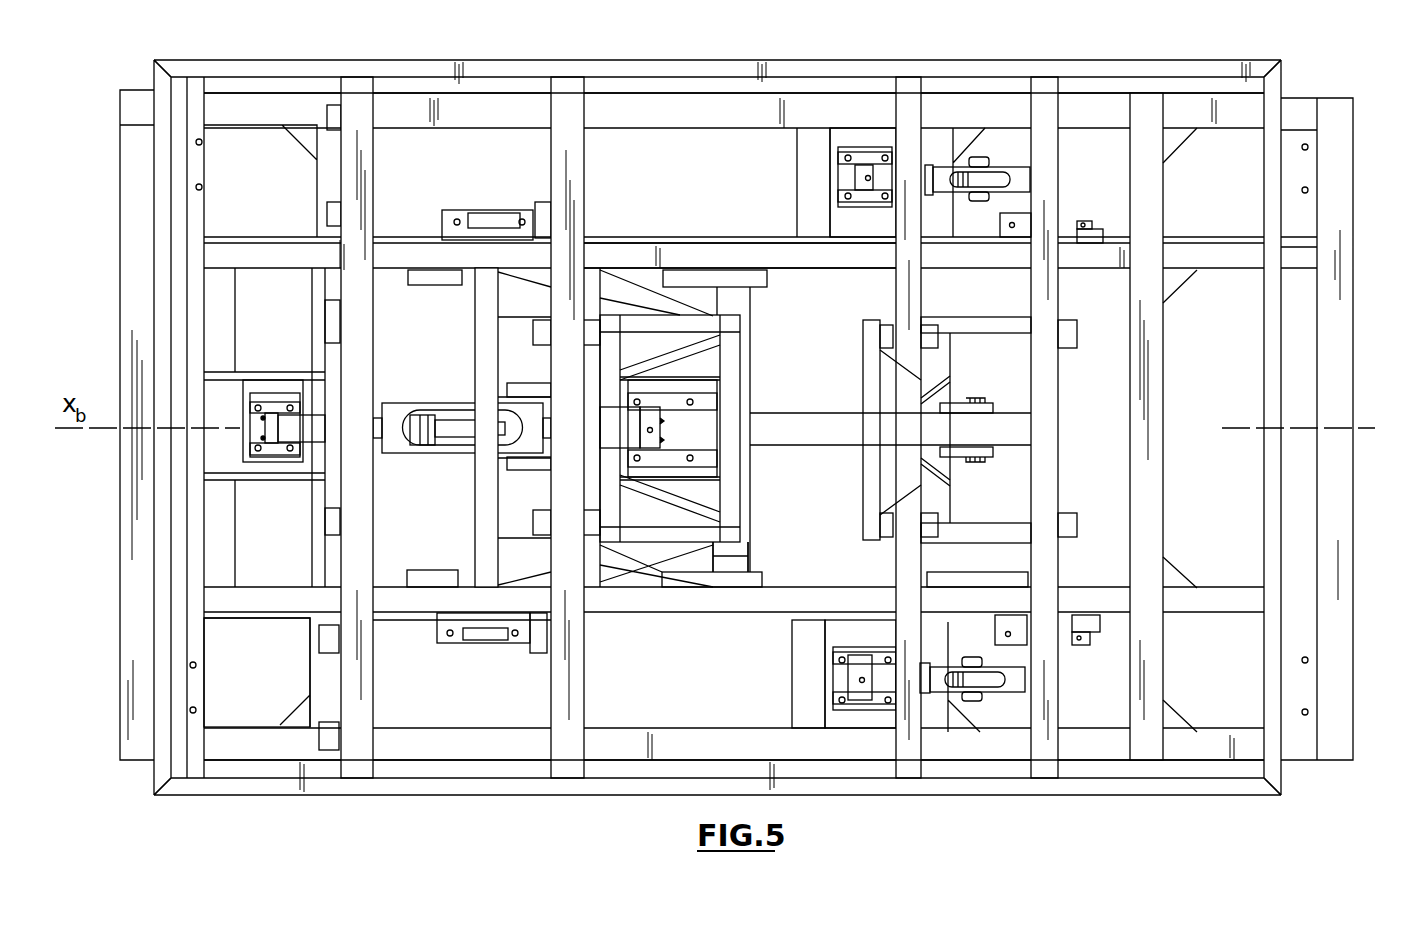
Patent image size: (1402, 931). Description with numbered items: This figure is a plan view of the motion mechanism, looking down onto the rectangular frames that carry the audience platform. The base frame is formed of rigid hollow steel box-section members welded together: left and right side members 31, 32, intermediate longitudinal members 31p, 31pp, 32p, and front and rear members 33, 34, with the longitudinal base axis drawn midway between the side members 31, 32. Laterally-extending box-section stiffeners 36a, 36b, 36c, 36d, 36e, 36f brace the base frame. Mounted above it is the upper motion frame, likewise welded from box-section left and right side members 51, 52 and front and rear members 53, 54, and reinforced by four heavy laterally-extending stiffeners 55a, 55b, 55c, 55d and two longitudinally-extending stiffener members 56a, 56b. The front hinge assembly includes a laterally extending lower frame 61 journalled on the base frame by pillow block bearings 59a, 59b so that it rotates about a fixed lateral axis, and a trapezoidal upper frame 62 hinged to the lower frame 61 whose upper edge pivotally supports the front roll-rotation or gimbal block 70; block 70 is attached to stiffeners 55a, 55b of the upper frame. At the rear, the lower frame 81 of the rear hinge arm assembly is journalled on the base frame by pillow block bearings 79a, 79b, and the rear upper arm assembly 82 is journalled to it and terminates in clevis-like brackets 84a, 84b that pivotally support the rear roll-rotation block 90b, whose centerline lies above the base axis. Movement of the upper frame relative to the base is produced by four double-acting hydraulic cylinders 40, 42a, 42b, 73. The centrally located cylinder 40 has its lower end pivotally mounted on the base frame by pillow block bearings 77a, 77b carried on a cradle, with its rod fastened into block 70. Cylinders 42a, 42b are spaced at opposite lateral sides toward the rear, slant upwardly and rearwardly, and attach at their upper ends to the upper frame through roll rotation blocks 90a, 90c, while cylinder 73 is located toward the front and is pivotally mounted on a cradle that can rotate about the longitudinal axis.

The left side member 31 is at (727, 756).
The intermediate longitudinal member 31p is at (382, 622).
The intermediate longitudinal member 31pp is at (845, 435).
The right side member 32 is at (663, 122).
The intermediate longitudinal member 32p is at (622, 238).
The front member 33 is at (152, 467).
The rear member 34 is at (1347, 466).
The laterally-extending stiffener 36a is at (320, 672).
The laterally-extending stiffener 36b is at (607, 582).
The laterally-extending stiffener 36c is at (742, 566).
The laterally-extending stiffener 36d is at (805, 655).
The laterally-extending stiffener 36e is at (932, 648).
The laterally-extending stiffener 36f is at (1140, 668).
The double-acting hydraulic cylinder 40 is at (637, 441).
The double-acting hydraulic cylinder 42a is at (835, 690).
The double-acting hydraulic cylinder 42b is at (855, 172).
The left side member 51 is at (1085, 797).
The right side member 52 is at (243, 60).
The front member 53 is at (172, 82).
The rear member 54 is at (1280, 84).
The laterally-extending stiffener 55a is at (355, 78).
The laterally-extending stiffener 55b is at (570, 82).
The laterally-extending stiffener 55c is at (908, 80).
The laterally-extending stiffener 55d is at (1046, 88).
The longitudinally-extending stiffener member 56a is at (712, 600).
The longitudinally-extending stiffener member 56b is at (815, 252).
The pillow block bearing 59a is at (468, 645).
The pillow block bearing 59b is at (485, 213).
The lower frame 61 is at (487, 517).
The upper frame 62 is at (732, 358).
The front roll-rotation block 70 is at (390, 414).
The double-acting hydraulic cylinder 73 is at (305, 435).
The pillow block bearing 77a is at (665, 460).
The pillow block bearing 77b is at (660, 410).
The pillow block bearing 79a is at (1015, 620).
The pillow block bearing 79b is at (1025, 237).
The lower frame 81 is at (1012, 320).
The rear upper arm assembly 82 is at (872, 412).
The clevis-like bracket 84a is at (992, 458).
The clevis-like bracket 84b is at (992, 405).
The roll rotation block 90a is at (1000, 668).
The rear roll-rotation block 90b is at (1005, 432).
The roll rotation block 90c is at (1010, 170).